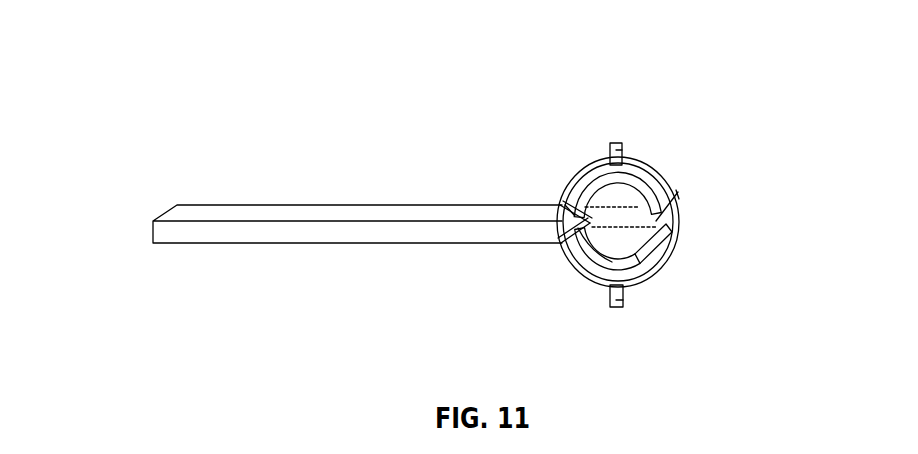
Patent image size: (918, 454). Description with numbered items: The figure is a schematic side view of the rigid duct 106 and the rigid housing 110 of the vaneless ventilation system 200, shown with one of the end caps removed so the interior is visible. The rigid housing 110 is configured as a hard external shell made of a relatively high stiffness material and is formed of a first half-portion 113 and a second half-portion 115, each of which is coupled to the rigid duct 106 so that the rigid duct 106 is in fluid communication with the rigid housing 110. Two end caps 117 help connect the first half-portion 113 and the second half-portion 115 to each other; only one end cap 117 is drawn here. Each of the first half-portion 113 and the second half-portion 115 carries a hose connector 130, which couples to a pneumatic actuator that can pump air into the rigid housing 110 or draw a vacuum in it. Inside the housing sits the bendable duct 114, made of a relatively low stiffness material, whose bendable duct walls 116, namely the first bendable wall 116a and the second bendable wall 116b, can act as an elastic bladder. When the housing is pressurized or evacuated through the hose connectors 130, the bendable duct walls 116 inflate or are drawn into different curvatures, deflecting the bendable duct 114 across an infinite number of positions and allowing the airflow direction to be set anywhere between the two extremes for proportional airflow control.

The vaneless ventilation system 200 is at (138, 49).
The rigid duct 106 is at (246, 205).
The rigid housing 110 is at (663, 172).
The hose connector 130 is at (624, 150).
The first half-portion 113 is at (588, 183).
The second half-portion 115 is at (590, 289).
The bendable duct walls 116 is at (612, 262).
The first bendable wall 116a is at (608, 185).
The second bendable wall 116b is at (565, 265).
The bendable duct 114 is at (573, 194).
The end cap 117 is at (683, 195).